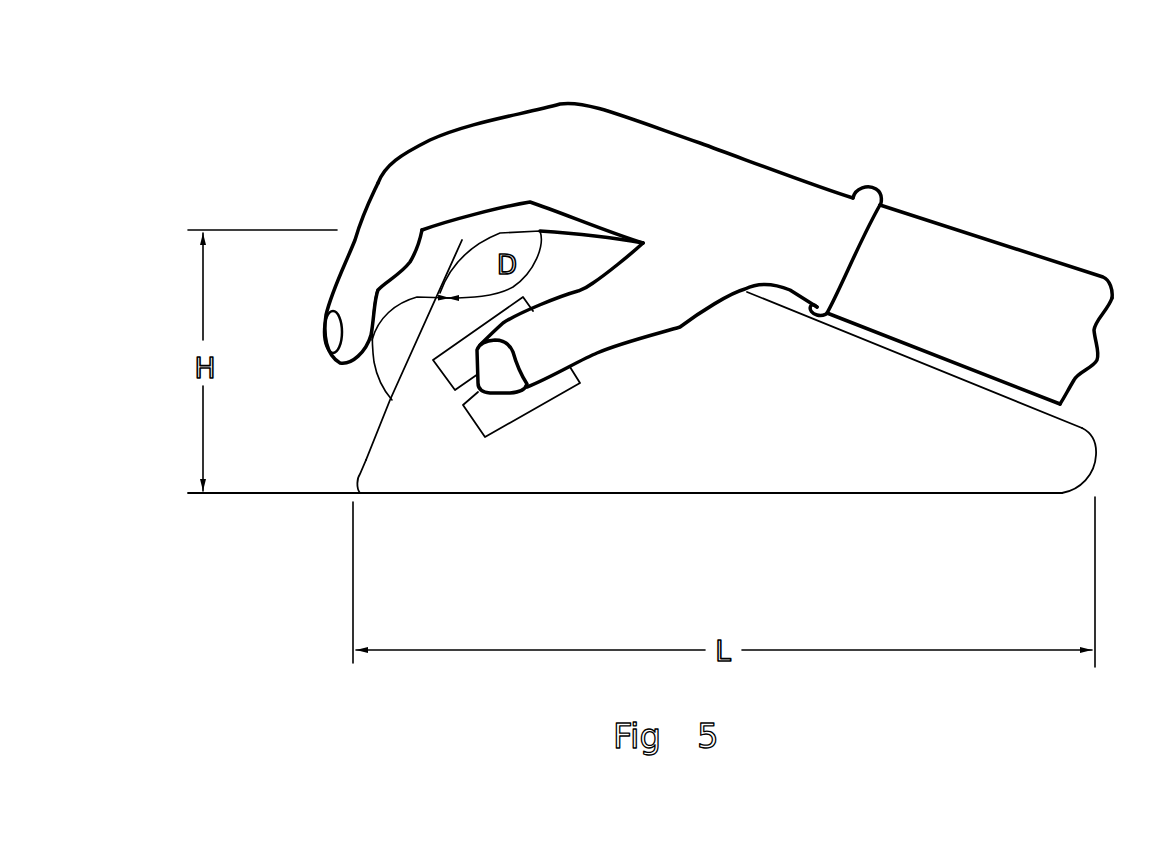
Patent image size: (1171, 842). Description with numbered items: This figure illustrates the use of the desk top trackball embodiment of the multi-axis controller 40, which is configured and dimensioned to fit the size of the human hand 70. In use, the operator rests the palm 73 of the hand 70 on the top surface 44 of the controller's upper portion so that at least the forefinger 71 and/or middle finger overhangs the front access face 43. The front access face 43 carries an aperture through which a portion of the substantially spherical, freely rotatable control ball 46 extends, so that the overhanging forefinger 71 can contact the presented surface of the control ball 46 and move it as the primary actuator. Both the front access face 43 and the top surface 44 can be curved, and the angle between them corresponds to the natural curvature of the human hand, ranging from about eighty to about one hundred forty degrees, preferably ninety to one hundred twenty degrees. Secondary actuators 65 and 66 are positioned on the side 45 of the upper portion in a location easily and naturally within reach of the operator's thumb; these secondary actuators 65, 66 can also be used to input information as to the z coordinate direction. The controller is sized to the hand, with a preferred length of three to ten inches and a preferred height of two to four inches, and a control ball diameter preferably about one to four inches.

The multi-axis controller 40 is at (820, 522).
The front access face 43 is at (353, 474).
The top surface 44 is at (920, 362).
The side of the upper portion 45 is at (460, 496).
The control ball 46 is at (378, 402).
The secondary actuator 65 is at (440, 389).
The secondary actuator 66 is at (530, 424).
The hand 70 is at (712, 118).
The forefinger 71 is at (298, 180).
The palm 73 is at (608, 236).